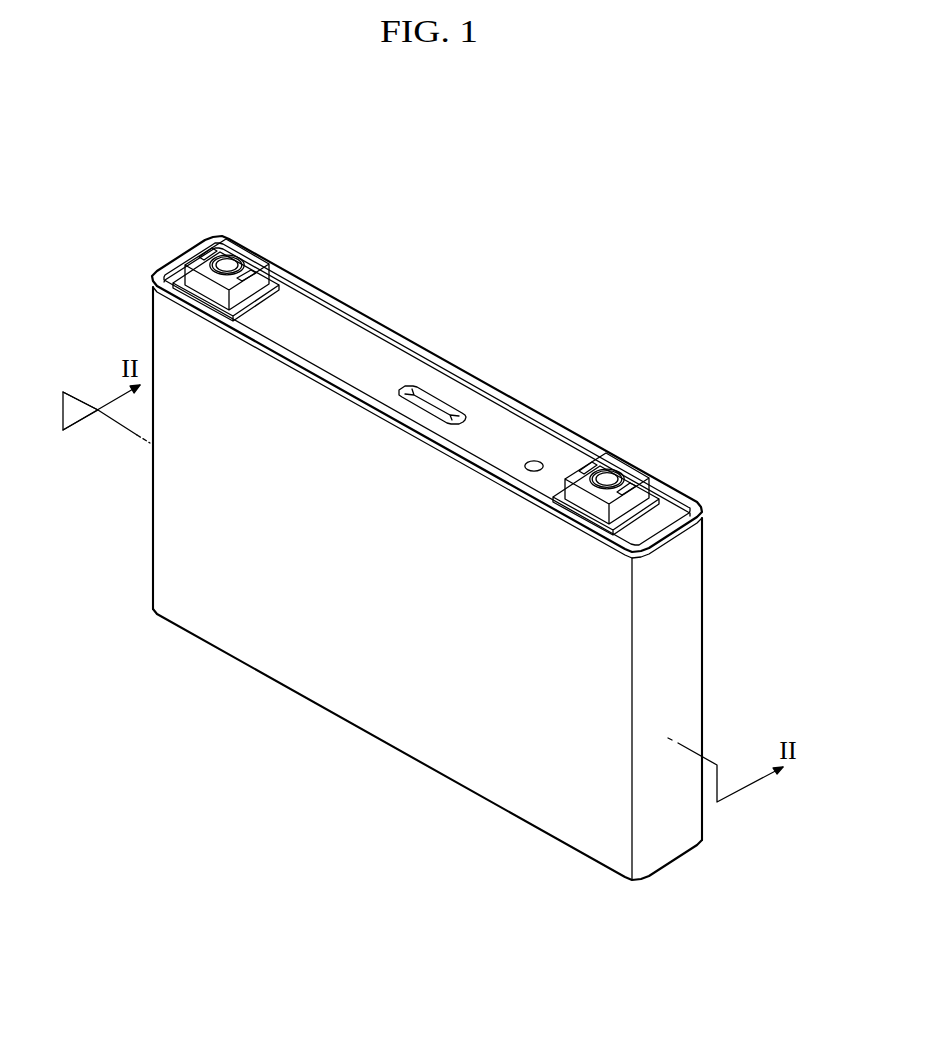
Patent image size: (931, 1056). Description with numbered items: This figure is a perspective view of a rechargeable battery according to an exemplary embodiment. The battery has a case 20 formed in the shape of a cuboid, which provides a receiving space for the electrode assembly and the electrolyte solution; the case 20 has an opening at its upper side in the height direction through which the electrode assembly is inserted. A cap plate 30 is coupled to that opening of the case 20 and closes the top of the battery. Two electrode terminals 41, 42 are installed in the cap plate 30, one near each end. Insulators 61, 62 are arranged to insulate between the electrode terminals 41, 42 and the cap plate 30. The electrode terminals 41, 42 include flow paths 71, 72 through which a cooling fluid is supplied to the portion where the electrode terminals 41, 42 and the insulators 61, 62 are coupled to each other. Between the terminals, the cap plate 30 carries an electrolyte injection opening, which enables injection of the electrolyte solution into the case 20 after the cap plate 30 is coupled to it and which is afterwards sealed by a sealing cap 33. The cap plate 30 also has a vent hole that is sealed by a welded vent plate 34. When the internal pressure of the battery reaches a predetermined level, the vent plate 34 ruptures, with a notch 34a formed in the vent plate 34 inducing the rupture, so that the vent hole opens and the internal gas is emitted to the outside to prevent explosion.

The case 20 is at (343, 697).
The cap plate 30 is at (365, 343).
The sealing cap 33 is at (540, 458).
The vent plate 34 is at (427, 393).
The notch 34a is at (440, 408).
The electrode terminal 41 is at (241, 243).
The electrode terminal 42 is at (617, 458).
The insulator 61 is at (290, 292).
The insulator 62 is at (637, 513).
The flow path 71 is at (211, 246).
The flow path 72 is at (633, 472).